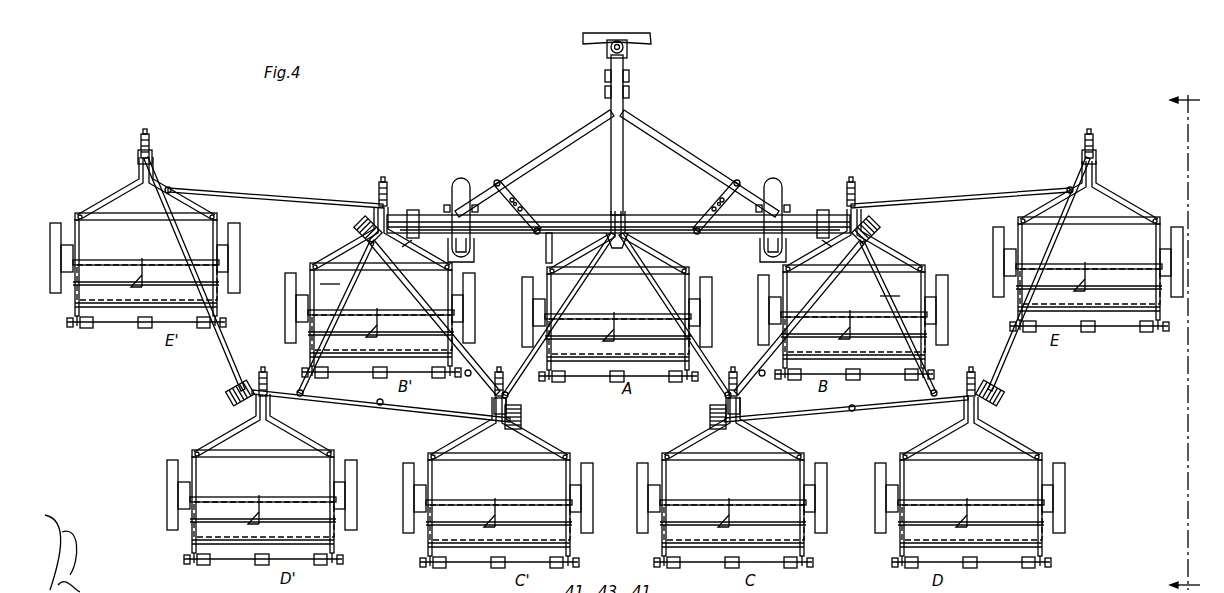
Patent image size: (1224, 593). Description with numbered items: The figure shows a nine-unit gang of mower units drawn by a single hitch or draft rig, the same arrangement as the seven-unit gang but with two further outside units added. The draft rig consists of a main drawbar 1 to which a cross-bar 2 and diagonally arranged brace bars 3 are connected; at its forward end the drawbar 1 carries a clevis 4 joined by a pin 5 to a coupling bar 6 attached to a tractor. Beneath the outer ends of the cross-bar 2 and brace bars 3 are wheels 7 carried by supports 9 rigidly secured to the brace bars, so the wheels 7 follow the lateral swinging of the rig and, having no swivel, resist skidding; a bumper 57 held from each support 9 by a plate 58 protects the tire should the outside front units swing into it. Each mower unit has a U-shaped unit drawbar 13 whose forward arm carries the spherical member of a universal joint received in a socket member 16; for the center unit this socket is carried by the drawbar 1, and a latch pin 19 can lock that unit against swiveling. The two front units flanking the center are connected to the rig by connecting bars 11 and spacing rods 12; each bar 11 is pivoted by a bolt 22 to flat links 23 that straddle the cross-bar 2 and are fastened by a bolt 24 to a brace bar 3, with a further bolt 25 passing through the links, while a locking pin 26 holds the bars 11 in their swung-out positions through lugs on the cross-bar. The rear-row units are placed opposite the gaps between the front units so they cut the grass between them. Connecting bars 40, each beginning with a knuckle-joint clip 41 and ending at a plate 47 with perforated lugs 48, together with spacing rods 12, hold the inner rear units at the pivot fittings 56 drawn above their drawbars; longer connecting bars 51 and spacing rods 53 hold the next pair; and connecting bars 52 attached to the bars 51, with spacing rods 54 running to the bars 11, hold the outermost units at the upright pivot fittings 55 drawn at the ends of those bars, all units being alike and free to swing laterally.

The main drawbar 1 is at (620, 110).
The cross-bar 2 is at (645, 214).
The brace bars 3 is at (556, 150).
The clevis 4 is at (626, 60).
The pin 5 is at (624, 47).
The coupling bar 6 is at (592, 38).
The wheels 7 is at (461, 178).
The supports 9 is at (446, 205).
The connecting bars 11 is at (495, 236).
The spacing rods 12 is at (493, 372).
The unit drawbar 13 is at (98, 205).
The socket member 16 is at (154, 157).
The latch pin 19 is at (553, 242).
The bolt 22 is at (537, 236).
The flat links 23 is at (508, 195).
The bolt 24 is at (497, 180).
The bolt 25 is at (522, 205).
The locking pin 26 is at (414, 240).
The connecting bars 40 is at (462, 350).
The clip 41 is at (228, 392).
The plate 47 is at (510, 397).
The perforated lugs 48 is at (468, 376).
The connecting bars 51 is at (384, 408).
The connecting bars 52 is at (232, 350).
The spacing rods 53 is at (350, 290).
The spacing rods 54 is at (298, 198).
The vertical pivot 55 is at (150, 136).
The vertical pivot 56 is at (503, 380).
The bumper 57 is at (458, 256).
The plate 58 is at (475, 258).